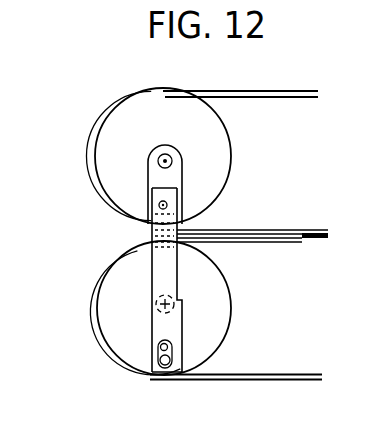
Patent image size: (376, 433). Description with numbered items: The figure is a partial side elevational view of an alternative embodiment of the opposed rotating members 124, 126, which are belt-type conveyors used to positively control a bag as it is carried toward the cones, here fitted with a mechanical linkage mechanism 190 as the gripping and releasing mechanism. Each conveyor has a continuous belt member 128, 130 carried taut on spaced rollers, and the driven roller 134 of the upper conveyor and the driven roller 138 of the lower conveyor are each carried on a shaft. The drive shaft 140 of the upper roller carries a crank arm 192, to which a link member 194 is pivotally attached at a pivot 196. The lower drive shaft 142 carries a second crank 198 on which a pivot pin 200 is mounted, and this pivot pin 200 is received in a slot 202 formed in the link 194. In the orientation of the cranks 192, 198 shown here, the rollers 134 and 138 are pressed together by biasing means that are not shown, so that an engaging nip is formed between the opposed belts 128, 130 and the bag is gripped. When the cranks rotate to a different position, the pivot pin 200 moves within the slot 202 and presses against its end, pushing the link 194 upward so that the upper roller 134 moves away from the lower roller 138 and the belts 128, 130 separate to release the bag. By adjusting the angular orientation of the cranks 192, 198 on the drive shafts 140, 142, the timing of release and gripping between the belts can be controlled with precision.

The opposed rotating member 124 is at (98, 97).
The opposed rotating member 126 is at (123, 387).
The continuous belt member 128 is at (259, 91).
The continuous belt member 130 is at (268, 381).
The driven roller 134 is at (113, 142).
The driven roller 138 is at (118, 289).
The drive shaft 140 is at (170, 158).
The drive shaft 142 is at (154, 305).
The linkage mechanism 190 is at (196, 268).
The crank arm 192 is at (157, 174).
The link member 194 is at (165, 266).
The pivot 196 is at (159, 205).
The second crank 198 is at (152, 319).
The pivot pin 200 is at (166, 366).
The slot 202 is at (158, 349).